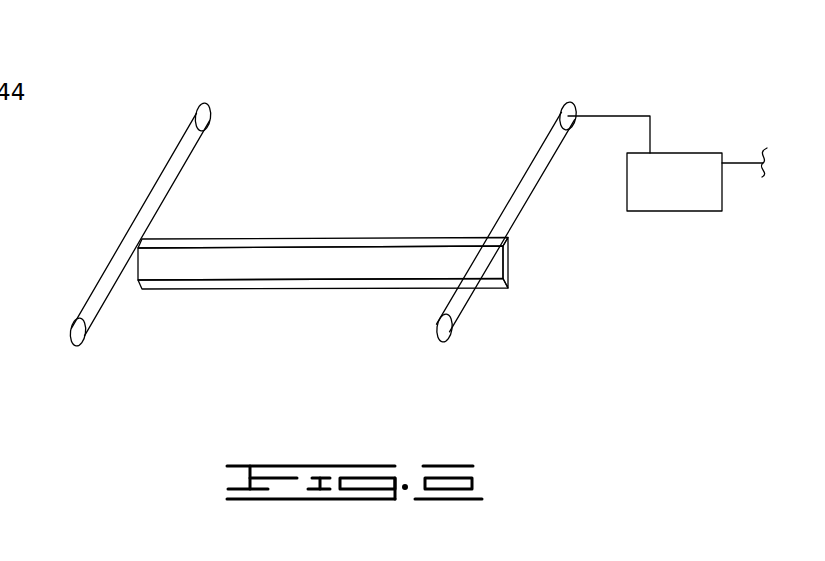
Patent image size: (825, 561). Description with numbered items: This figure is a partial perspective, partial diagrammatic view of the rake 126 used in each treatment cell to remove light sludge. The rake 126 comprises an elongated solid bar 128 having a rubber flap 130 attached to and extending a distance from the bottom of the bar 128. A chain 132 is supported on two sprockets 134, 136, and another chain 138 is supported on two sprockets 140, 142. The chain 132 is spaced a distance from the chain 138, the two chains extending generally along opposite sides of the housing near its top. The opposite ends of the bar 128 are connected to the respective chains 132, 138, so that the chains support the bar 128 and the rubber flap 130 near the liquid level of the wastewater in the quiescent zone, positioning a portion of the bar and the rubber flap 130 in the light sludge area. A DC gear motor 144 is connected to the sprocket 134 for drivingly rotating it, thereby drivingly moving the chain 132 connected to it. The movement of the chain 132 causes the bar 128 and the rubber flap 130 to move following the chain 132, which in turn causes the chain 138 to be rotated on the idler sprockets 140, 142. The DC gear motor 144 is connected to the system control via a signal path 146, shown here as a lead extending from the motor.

The rake 126 is at (332, 226).
The elongated solid bar 128 is at (393, 260).
The rubber flap 130 is at (253, 290).
The chain 132 is at (538, 200).
The sprocket 134 is at (577, 105).
The sprocket 136 is at (442, 335).
The chain 138 is at (143, 200).
The idler sprocket 140 is at (203, 102).
The idler sprocket 142 is at (70, 335).
The DC gear motor 144 is at (670, 152).
The signal path 146 is at (732, 163).